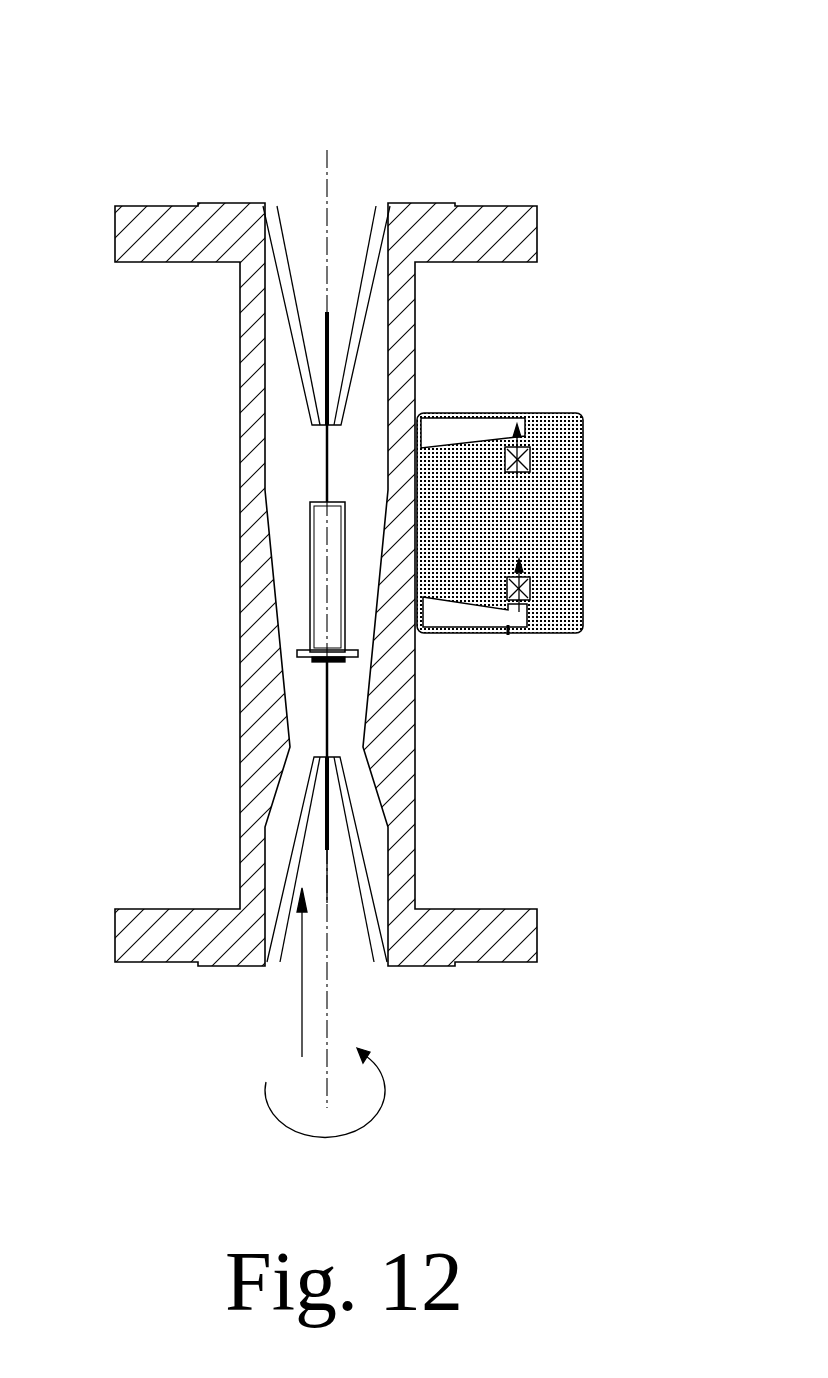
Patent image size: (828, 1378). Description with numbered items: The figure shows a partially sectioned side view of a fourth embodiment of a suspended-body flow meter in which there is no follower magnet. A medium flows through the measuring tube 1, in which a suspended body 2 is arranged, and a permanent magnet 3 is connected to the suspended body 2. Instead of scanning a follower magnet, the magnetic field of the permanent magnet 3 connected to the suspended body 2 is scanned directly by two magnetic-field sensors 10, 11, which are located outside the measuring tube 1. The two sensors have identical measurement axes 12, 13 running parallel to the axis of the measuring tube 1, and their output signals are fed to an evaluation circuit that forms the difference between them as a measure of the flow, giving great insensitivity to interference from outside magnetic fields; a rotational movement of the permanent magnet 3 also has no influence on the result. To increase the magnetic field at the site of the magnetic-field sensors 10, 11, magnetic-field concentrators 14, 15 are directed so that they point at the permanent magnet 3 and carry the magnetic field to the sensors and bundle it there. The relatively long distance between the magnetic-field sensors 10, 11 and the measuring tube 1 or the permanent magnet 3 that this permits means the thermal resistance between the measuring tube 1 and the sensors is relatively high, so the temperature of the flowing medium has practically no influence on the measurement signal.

The measuring tube 1 is at (430, 218).
The suspended body 2 is at (300, 653).
The permanent magnet 3 is at (323, 543).
The magnetic-field sensor 10 is at (543, 415).
The magnetic-field sensor 11 is at (560, 593).
The measurement axis 12 is at (525, 416).
The measurement axis 13 is at (533, 605).
The magnetic-field concentrator 14 is at (449, 430).
The magnetic-field concentrator 15 is at (458, 612).